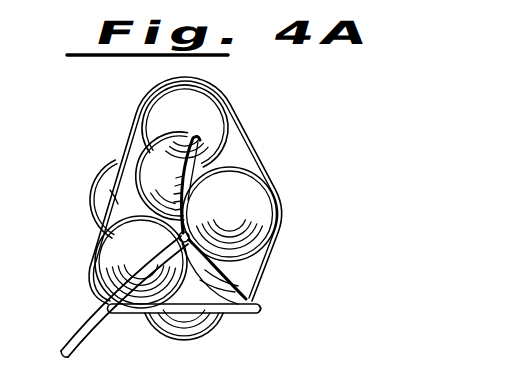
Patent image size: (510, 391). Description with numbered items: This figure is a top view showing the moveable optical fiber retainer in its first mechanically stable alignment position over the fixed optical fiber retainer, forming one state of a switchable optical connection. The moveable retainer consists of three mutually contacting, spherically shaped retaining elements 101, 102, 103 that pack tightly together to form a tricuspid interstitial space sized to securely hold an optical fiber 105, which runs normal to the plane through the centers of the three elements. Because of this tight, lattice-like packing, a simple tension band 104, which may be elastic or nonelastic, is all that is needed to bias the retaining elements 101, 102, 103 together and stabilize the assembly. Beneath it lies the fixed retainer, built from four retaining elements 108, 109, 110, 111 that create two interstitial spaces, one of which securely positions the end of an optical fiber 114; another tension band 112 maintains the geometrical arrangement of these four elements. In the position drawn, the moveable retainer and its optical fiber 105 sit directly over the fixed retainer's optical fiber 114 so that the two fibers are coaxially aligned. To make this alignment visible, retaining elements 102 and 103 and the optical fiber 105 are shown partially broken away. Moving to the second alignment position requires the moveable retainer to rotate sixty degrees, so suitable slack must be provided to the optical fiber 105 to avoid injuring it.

The retaining element 101 is at (108, 270).
The retaining element 102 is at (163, 167).
The retaining element 103 is at (246, 306).
The tension band 104 is at (117, 200).
The optical fiber 105 is at (127, 272).
The retaining element 108 is at (202, 107).
The retaining element 109 is at (117, 180).
The retaining element 110 is at (177, 323).
The retaining element 111 is at (253, 223).
The tension band 112 is at (120, 170).
The optical fiber 114 is at (183, 237).